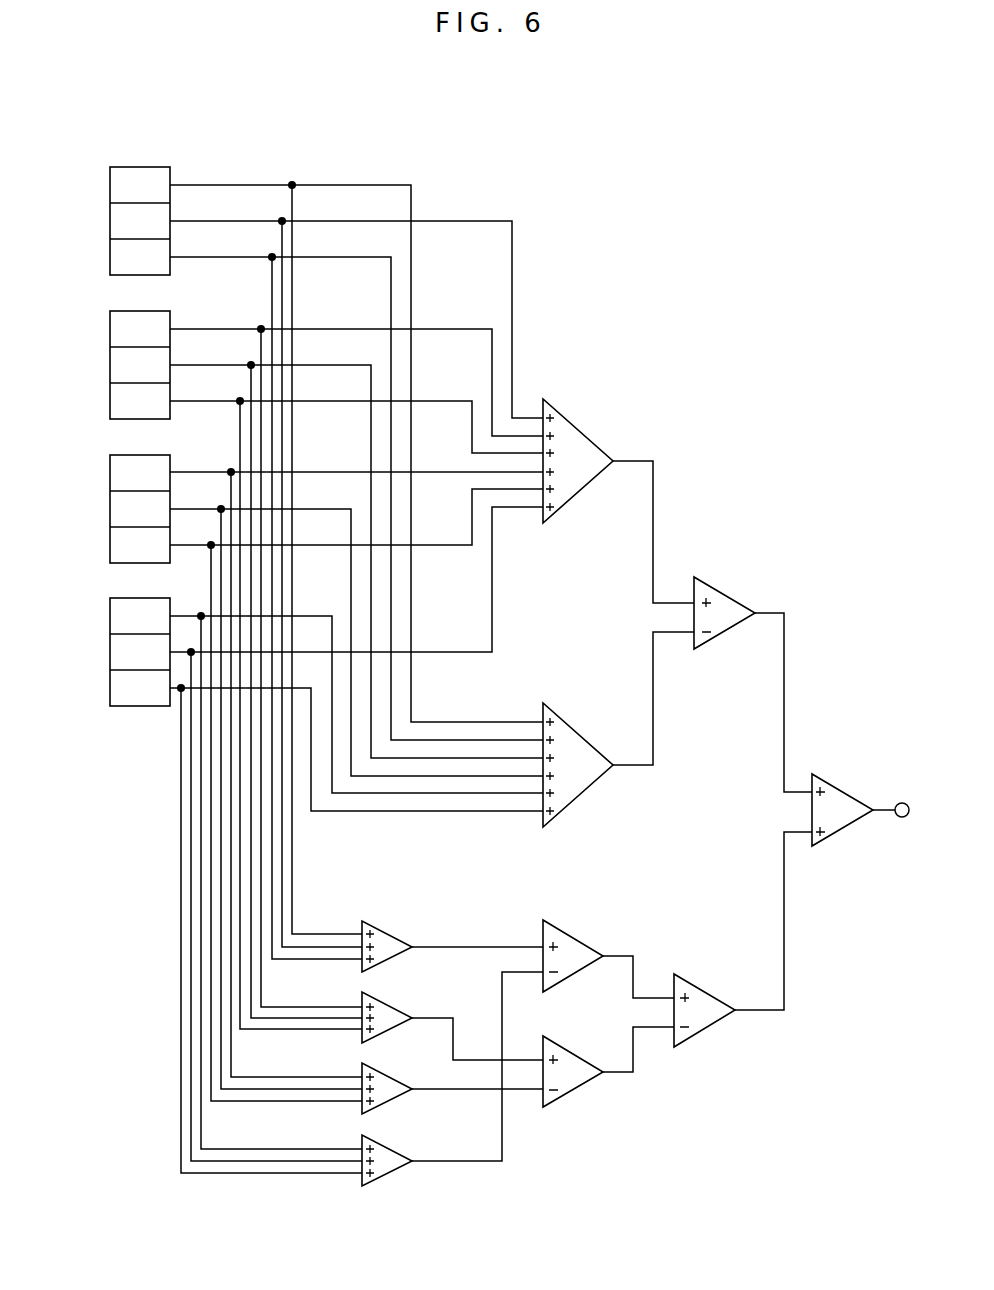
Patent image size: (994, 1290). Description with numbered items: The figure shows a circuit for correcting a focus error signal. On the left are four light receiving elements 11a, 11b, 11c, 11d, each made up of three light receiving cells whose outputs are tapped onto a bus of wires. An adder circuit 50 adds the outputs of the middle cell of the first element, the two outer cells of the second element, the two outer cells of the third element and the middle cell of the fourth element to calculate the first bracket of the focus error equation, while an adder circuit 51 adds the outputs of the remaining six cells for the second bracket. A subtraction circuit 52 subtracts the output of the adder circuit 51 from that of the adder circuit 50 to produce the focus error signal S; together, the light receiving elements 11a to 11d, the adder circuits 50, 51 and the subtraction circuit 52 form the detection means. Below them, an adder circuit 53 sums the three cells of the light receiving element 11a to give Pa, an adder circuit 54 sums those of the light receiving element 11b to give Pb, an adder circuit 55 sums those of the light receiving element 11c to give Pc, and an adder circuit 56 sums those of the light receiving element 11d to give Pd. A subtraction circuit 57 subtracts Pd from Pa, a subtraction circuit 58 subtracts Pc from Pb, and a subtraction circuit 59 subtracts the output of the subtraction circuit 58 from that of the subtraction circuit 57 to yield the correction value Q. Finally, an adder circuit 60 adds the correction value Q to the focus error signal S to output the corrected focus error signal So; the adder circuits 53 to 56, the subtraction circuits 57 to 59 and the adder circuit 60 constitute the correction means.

The light receiving element 11a is at (108, 227).
The light receiving element 11b is at (108, 377).
The light receiving element 11c is at (108, 520).
The light receiving element 11d is at (108, 669).
The adder circuit 50 is at (583, 429).
The adder circuit 51 is at (583, 733).
The subtraction circuit 52 is at (737, 592).
The adder circuit 53 is at (396, 931).
The adder circuit 54 is at (396, 1001).
The adder circuit 55 is at (396, 1071).
The adder circuit 56 is at (396, 1141).
The subtraction circuit 57 is at (590, 940).
The subtraction circuit 58 is at (575, 1101).
The subtraction circuit 59 is at (708, 985).
The adder circuit 60 is at (848, 788).